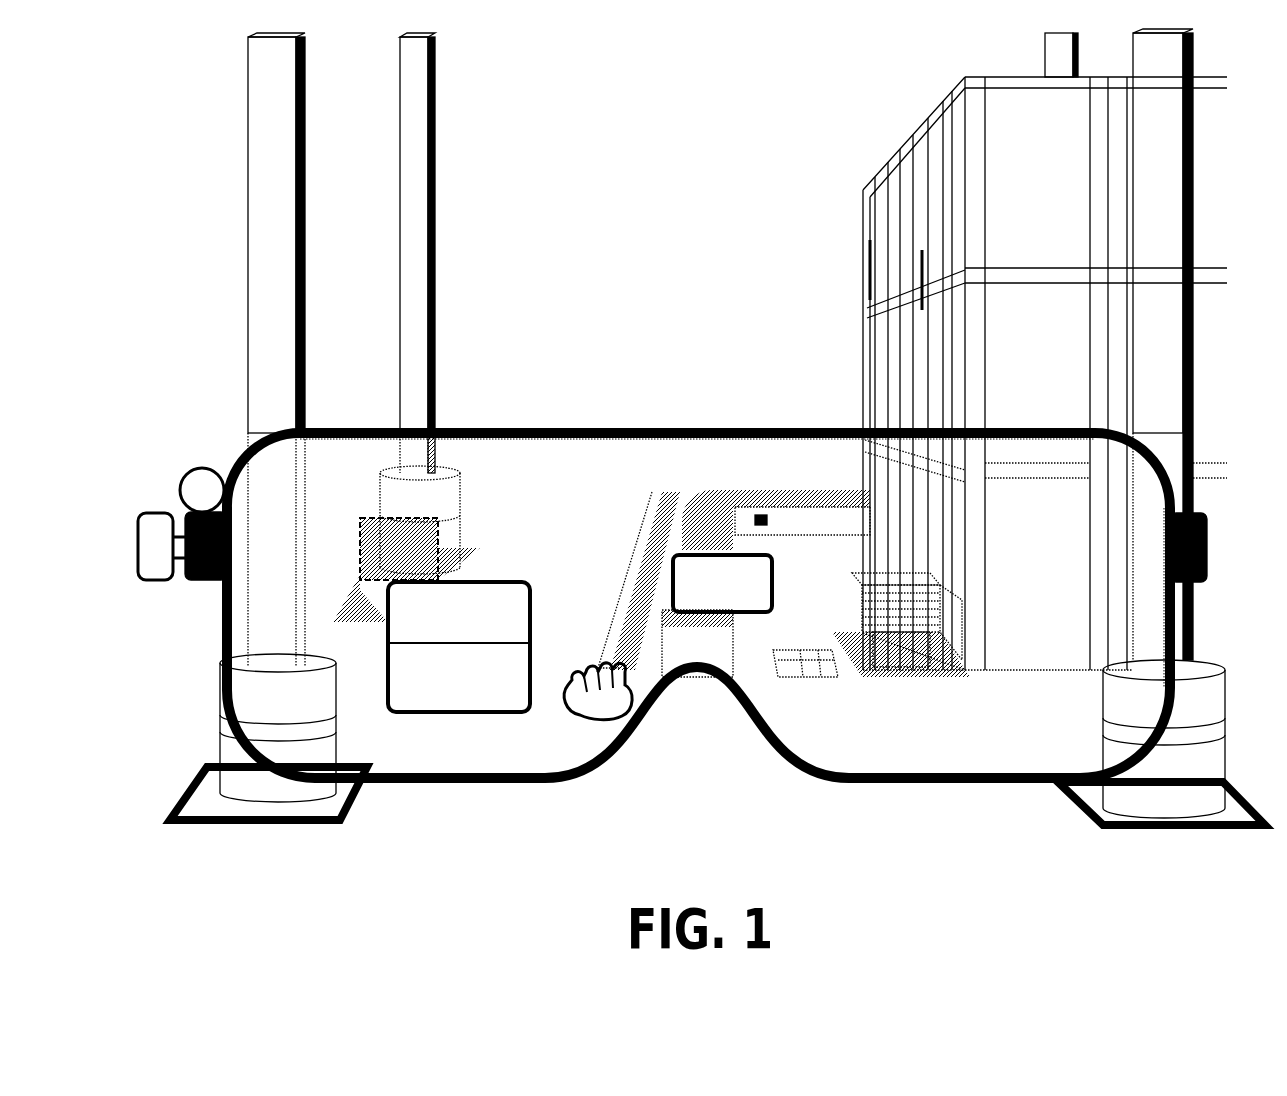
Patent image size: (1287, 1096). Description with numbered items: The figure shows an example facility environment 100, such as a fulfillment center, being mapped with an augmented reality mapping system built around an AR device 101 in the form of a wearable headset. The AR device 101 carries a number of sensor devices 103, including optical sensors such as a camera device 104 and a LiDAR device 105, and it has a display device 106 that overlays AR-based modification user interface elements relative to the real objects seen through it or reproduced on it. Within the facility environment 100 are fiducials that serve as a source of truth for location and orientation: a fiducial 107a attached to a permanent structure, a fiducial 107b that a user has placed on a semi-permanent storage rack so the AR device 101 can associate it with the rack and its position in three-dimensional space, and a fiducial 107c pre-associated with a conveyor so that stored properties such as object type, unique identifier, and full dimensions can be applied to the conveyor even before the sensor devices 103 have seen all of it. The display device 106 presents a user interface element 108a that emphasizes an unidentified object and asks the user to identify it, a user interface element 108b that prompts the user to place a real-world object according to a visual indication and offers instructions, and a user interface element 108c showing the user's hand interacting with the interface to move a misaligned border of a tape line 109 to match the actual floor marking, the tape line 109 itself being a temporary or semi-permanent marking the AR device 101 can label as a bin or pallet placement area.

The facility environment 100 is at (203, 82).
The AR device 101 is at (618, 770).
The sensor devices 103 is at (172, 392).
The camera device 104 is at (207, 469).
The LiDAR device 105 is at (153, 514).
The display device 106 is at (972, 770).
The fiducial 107a is at (827, 673).
The fiducial 107b is at (1025, 498).
The fiducial 107c is at (778, 522).
The AR-based modification user interface element 108a is at (765, 613).
The AR-based modification user interface element 108b is at (513, 600).
The AR-based map modification user interface element 108c is at (571, 707).
The tape line 109 is at (887, 678).